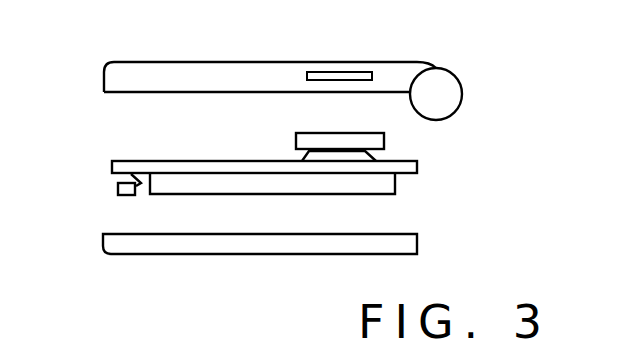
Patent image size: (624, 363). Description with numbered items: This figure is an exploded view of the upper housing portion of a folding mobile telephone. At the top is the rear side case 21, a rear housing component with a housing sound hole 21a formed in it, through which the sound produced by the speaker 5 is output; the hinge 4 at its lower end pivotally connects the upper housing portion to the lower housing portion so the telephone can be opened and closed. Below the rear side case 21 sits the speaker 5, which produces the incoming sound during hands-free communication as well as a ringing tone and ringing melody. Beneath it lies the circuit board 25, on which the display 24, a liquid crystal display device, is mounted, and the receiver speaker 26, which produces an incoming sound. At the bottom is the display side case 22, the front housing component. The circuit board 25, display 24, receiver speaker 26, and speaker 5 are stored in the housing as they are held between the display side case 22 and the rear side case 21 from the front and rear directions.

The rear side case 21 is at (168, 62).
The housing sound hole 21a is at (350, 70).
The hinge 4 is at (458, 78).
The speaker 5 is at (388, 136).
The circuit board 25 is at (112, 170).
The display 24 is at (398, 183).
The receiver speaker 26 is at (117, 190).
The display side case 22 is at (302, 255).